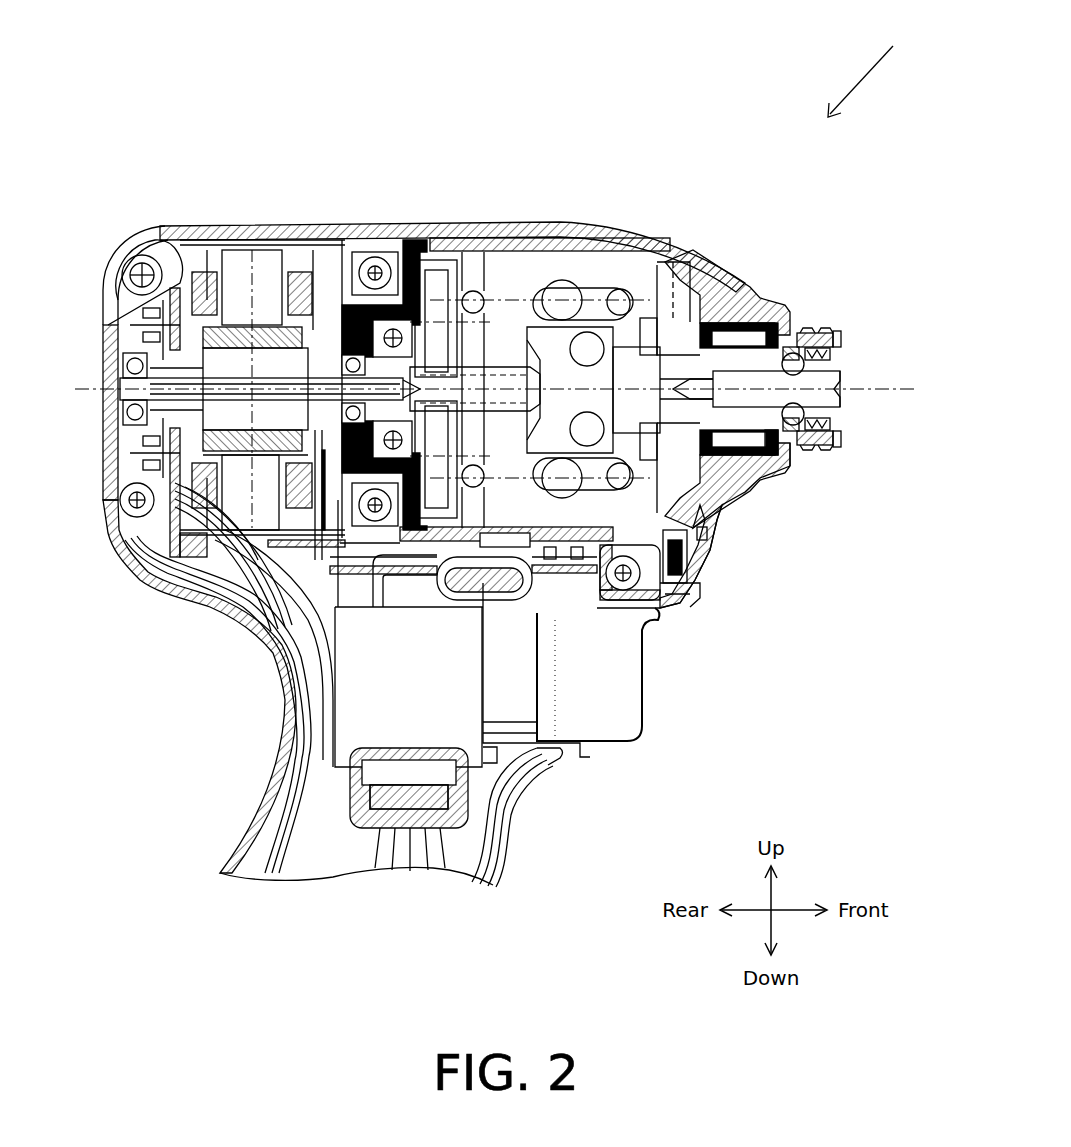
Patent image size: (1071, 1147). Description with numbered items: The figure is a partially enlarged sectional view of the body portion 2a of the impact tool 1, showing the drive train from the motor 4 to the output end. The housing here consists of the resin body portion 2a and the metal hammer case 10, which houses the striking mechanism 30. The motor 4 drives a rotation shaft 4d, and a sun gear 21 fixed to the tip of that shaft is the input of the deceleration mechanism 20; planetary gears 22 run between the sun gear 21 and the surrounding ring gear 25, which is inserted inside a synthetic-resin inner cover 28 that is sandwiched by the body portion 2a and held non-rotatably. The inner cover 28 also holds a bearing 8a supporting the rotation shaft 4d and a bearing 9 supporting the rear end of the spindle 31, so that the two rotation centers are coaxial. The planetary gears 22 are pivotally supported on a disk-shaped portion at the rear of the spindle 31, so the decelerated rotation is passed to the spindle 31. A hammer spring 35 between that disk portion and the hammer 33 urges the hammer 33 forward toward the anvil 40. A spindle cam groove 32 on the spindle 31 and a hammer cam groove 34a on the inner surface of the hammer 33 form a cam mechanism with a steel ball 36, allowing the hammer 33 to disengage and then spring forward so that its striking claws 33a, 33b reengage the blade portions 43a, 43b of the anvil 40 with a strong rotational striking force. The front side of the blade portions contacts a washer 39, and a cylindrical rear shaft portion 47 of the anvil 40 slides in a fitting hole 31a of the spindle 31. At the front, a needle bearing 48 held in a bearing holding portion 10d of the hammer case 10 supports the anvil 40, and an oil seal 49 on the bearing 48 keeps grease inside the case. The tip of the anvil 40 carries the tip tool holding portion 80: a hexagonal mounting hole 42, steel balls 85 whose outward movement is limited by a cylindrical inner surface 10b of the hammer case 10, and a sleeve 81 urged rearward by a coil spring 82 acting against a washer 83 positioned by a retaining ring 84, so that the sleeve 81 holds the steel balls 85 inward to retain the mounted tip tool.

The impact tool 1 is at (869, 66).
The body portion 2a is at (186, 250).
The motor 4 is at (270, 334).
The rotation shaft 4d is at (270, 386).
The bearing 8a is at (353, 415).
The bearing 9 is at (320, 560).
The hammer case 10 is at (772, 388).
The cylindrical inner surface 10b is at (790, 470).
The bearing holding portion 10d is at (755, 500).
The deceleration mechanism 20 is at (335, 370).
The sun gear 21 is at (470, 300).
The planetary gear 22 is at (396, 300).
The ring gear 25 is at (446, 260).
The inner cover 28 is at (366, 308).
The striking mechanism 30 is at (593, 462).
The spindle 31 is at (500, 355).
The fitting hole 31a is at (630, 583).
The spindle cam groove 32 is at (556, 348).
The hammer 33 is at (588, 278).
The striking claw 33a is at (668, 340).
The striking claw 33b is at (660, 578).
The hammer cam groove 34a is at (640, 330).
The hammer spring 35 is at (560, 290).
The steel ball 36 is at (578, 438).
The washer 39 is at (740, 515).
The anvil 40 is at (769, 320).
The mounting hole 42 is at (820, 400).
The blade portion 43a is at (687, 245).
The blade portion 43b is at (758, 580).
The rear shaft portion 47 is at (678, 592).
The bearing 48 is at (770, 330).
The oil seal 49 is at (775, 440).
The tip tool holding portion 80 is at (851, 369).
The sleeve 81 is at (832, 440).
The coil spring 82 is at (813, 343).
The washer 83 is at (835, 345).
The retaining ring 84 is at (835, 362).
The steel ball 85 is at (797, 433).